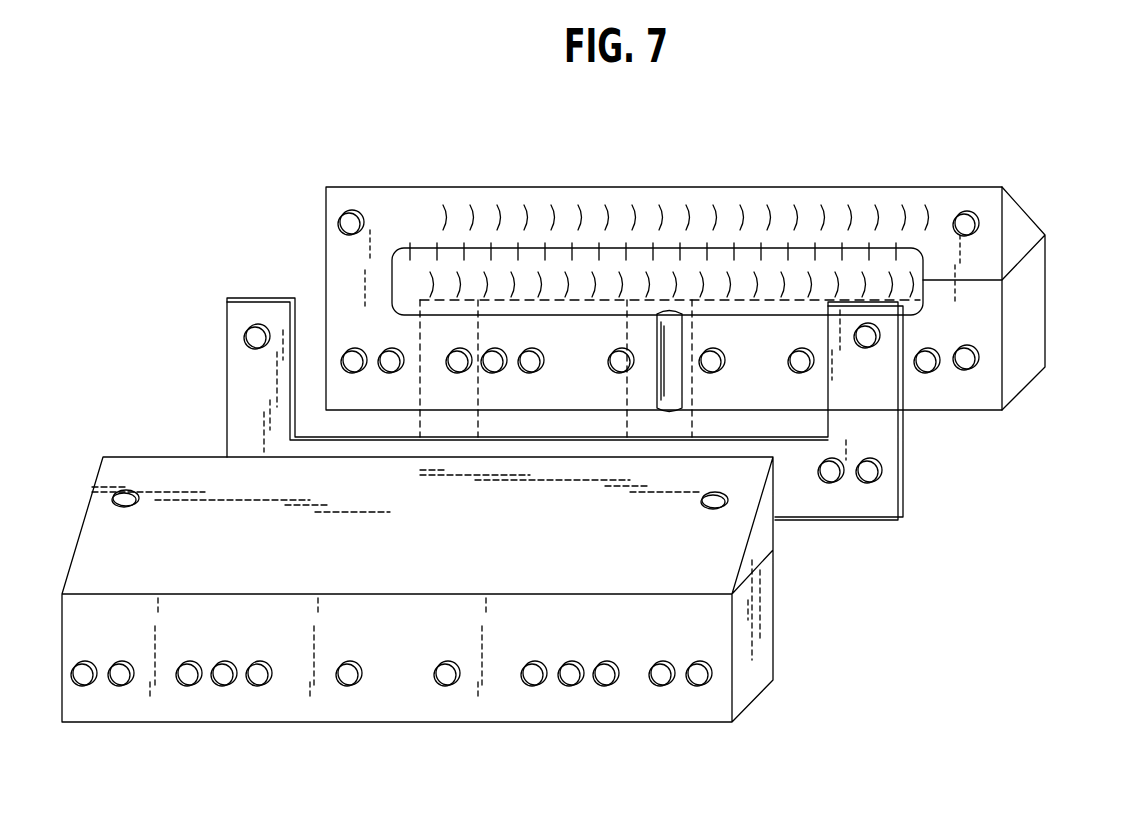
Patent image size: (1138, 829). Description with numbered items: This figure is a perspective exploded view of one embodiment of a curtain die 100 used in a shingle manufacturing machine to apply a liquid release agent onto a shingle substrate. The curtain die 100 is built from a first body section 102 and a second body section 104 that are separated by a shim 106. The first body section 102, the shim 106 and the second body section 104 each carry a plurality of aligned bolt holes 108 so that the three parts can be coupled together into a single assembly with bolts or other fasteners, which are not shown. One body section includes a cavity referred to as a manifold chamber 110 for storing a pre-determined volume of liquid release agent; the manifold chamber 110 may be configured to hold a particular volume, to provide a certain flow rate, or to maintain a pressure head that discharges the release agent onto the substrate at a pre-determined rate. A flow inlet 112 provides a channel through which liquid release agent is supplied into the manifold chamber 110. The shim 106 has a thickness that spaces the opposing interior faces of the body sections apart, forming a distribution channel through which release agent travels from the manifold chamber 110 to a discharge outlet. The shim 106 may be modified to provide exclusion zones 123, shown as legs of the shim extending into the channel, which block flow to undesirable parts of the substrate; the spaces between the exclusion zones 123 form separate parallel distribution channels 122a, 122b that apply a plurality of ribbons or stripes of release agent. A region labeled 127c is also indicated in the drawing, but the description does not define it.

The curtain die 100 is at (1030, 635).
The first body section 102 is at (678, 707).
The second body section 104 is at (1027, 288).
The shim 106 is at (893, 447).
The bolt holes 108 is at (356, 233).
The manifold chamber 110 is at (533, 290).
The flow inlet 112 is at (676, 298).
The distribution channel 122a is at (352, 346).
The distribution channel 122b is at (583, 347).
The exclusion zones 123 is at (422, 353).
The third region 127c is at (758, 338).